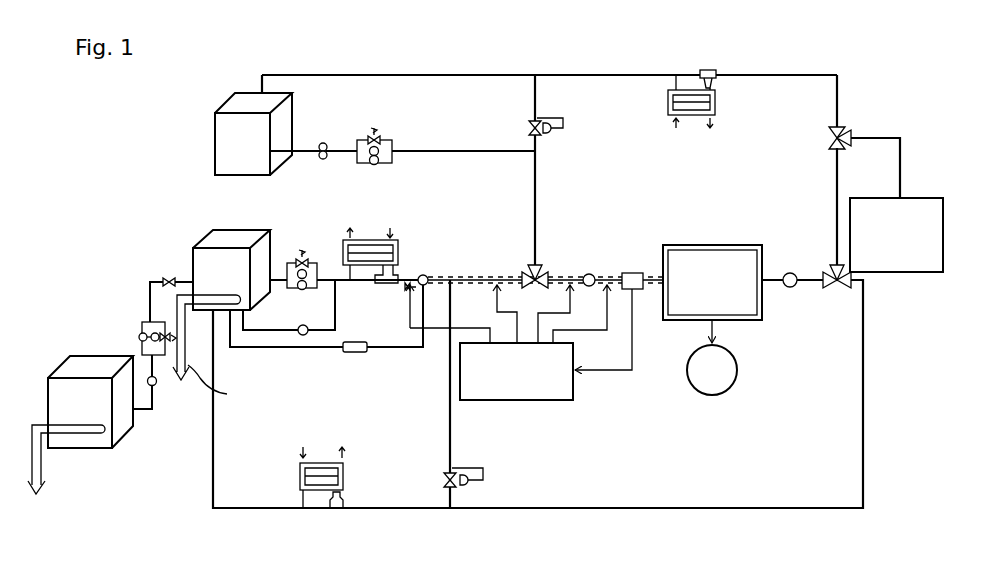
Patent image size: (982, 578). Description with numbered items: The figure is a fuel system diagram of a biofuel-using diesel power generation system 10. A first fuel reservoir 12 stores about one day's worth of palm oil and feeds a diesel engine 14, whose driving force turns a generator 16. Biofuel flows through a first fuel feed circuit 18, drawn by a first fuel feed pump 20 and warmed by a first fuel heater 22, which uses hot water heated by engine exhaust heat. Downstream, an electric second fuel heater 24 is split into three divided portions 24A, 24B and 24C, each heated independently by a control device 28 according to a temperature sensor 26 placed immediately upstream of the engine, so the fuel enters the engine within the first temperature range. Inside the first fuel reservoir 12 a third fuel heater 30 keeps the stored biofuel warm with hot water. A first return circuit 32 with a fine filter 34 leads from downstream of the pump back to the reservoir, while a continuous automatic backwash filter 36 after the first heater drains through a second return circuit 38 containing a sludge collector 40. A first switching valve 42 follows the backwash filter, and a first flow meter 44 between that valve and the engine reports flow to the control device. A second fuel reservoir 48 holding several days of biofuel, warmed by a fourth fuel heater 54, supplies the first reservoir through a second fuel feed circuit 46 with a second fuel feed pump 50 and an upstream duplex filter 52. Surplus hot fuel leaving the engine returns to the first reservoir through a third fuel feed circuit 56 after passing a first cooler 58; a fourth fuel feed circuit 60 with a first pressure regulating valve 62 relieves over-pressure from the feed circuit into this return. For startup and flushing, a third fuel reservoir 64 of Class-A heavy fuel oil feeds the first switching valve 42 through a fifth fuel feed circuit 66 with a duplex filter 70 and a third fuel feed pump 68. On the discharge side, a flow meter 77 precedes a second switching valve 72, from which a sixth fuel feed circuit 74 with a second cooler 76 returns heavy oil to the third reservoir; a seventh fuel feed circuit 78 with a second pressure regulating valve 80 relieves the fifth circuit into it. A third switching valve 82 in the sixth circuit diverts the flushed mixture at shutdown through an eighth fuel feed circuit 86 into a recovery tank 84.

The diesel power generation system 10 is at (168, 192).
The first fuel reservoir 12 is at (240, 231).
The diesel engine 14 is at (714, 245).
The generator 16 is at (737, 357).
The first fuel feed circuit 18 is at (470, 277).
The first fuel feed pump 20 is at (316, 262).
The first fuel heater 22 is at (400, 240).
The second fuel heater 24 is at (488, 257).
The divided portion 24A is at (403, 284).
The divided portion 24B is at (470, 283).
The divided portion 24C is at (564, 284).
The temperature sensor 26 is at (640, 273).
The control device 28 is at (540, 401).
The third fuel heater 30 is at (207, 311).
The first return circuit 32 is at (336, 302).
The fine filter 34 is at (305, 325).
The continuous automatic backwash filter 36 is at (422, 275).
The second return circuit 38 is at (315, 348).
The sludge collector 40 is at (358, 352).
The first switching valve 42 is at (527, 268).
The first flow meter 44 is at (585, 275).
The second fuel feed circuit 46 is at (153, 410).
The second fuel reservoir 48 is at (92, 356).
The second fuel feed pump 50 is at (140, 332).
The duplex filter 52 is at (157, 390).
The fourth fuel heater 54 is at (82, 437).
The third fuel feed circuit 56 is at (712, 507).
The first cooler 58 is at (347, 488).
The fourth fuel feed circuit 60 is at (448, 445).
The first pressure regulating valve 62 is at (485, 467).
The third fuel reservoir 64 is at (240, 92).
The fifth fuel feed circuit 66 is at (455, 150).
The third fuel feed pump 68 is at (390, 137).
The duplex filter 70 is at (327, 158).
The second switching valve 72 is at (838, 289).
The sixth fuel feed circuit 74 is at (780, 77).
The second cooler 76 is at (667, 103).
The flow meter 77 is at (790, 273).
The seventh fuel feed circuit 78 is at (537, 205).
The second pressure regulating valve 80 is at (545, 130).
The third switching valve 82 is at (826, 135).
The recovery tank 84 is at (898, 274).
The eighth fuel feed circuit 86 is at (885, 134).